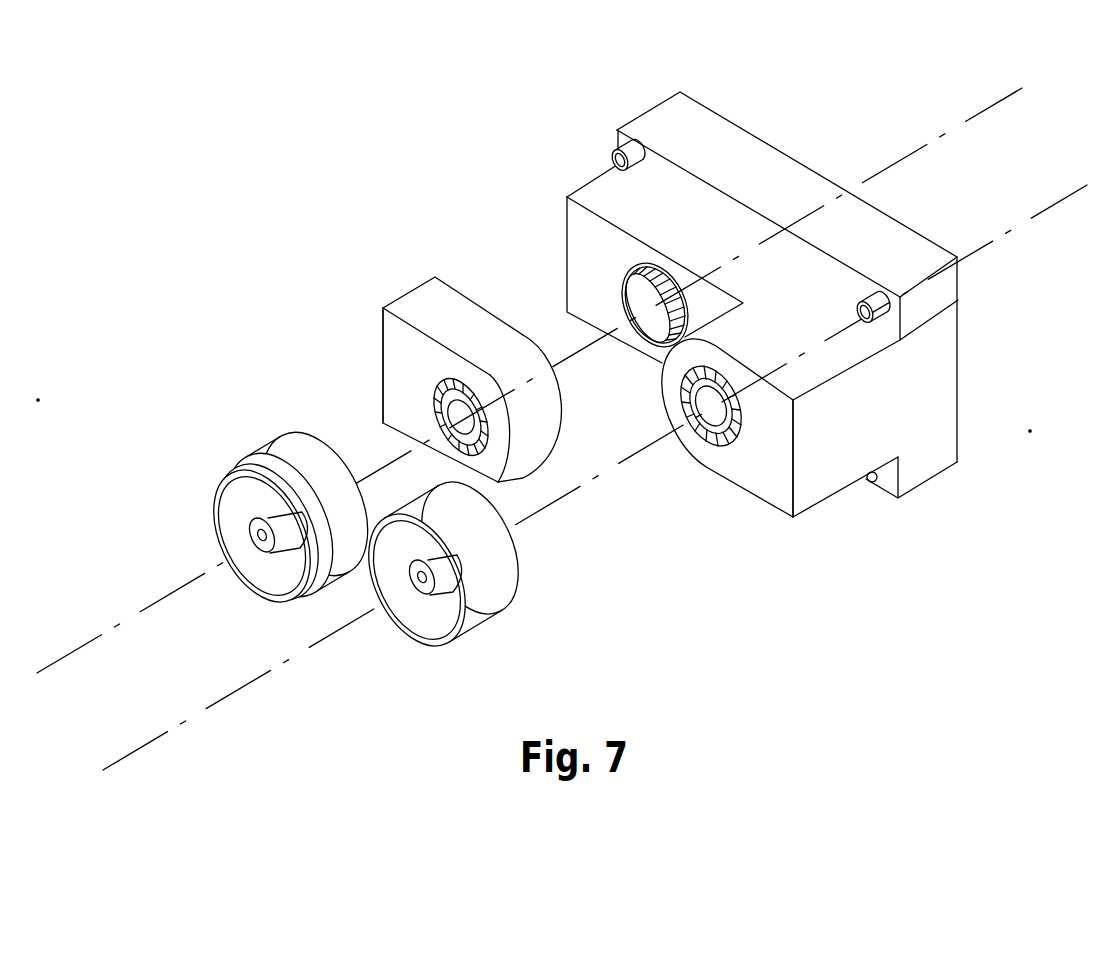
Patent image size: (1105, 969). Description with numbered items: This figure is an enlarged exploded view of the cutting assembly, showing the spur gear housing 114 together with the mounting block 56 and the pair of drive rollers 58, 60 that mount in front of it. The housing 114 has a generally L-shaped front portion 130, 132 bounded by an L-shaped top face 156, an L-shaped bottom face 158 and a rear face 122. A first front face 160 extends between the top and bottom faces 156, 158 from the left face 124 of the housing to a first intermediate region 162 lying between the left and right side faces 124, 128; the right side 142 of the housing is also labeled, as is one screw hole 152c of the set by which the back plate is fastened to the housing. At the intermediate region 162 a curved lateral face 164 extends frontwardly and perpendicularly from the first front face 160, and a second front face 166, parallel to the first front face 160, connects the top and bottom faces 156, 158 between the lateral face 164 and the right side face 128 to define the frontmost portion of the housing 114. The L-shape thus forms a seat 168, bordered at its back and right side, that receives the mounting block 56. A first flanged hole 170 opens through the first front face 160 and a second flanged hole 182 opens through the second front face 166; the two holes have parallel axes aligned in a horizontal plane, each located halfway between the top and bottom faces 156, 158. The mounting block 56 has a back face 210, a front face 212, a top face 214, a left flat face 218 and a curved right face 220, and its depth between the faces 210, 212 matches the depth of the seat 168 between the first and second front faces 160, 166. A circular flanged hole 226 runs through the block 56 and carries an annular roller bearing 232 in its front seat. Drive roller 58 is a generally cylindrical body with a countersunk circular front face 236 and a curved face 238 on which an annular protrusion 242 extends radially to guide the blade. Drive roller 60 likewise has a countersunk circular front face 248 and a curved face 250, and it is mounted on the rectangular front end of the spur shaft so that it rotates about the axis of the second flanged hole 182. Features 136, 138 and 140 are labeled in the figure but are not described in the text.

The mounting block 56 is at (394, 268).
The drive roller 58 is at (217, 458).
The drive roller 60 is at (510, 627).
The housing 114 is at (826, 168).
The rear face 122 is at (908, 222).
The left face 124 is at (553, 228).
The right side face 128 is at (932, 363).
The front portion 130 is at (643, 105).
The L-shaped front portion 132 is at (573, 180).
The inclined surface 136 is at (693, 190).
The fastener 138 is at (890, 487).
The top surface 140 is at (688, 153).
The right side 142 is at (918, 495).
The screw hole 152c is at (890, 314).
The L-shaped top face 156 is at (741, 348).
The L-shaped bottom face 158 is at (808, 490).
The first front face 160 is at (574, 258).
The first intermediate region 162 is at (742, 287).
The curved lateral face 164 is at (688, 330).
The second front face 166 is at (731, 470).
The seat 168 is at (597, 302).
The first flanged hole 170 is at (660, 319).
The second flanged hole 182 is at (714, 412).
The back face 210 is at (456, 326).
The front face 212 is at (405, 338).
The top face 214 is at (401, 318).
The left flat face 218 is at (405, 362).
The curved right face 220 is at (522, 422).
The circular flanged hole 226 is at (458, 408).
The annular roller bearing 232 is at (478, 461).
The countersunk circular front face 236 is at (237, 511).
The curved face 238 is at (290, 452).
The annular protrusion 242 is at (250, 460).
The countersunk circular front face 248 is at (441, 623).
The curved face 250 is at (493, 565).